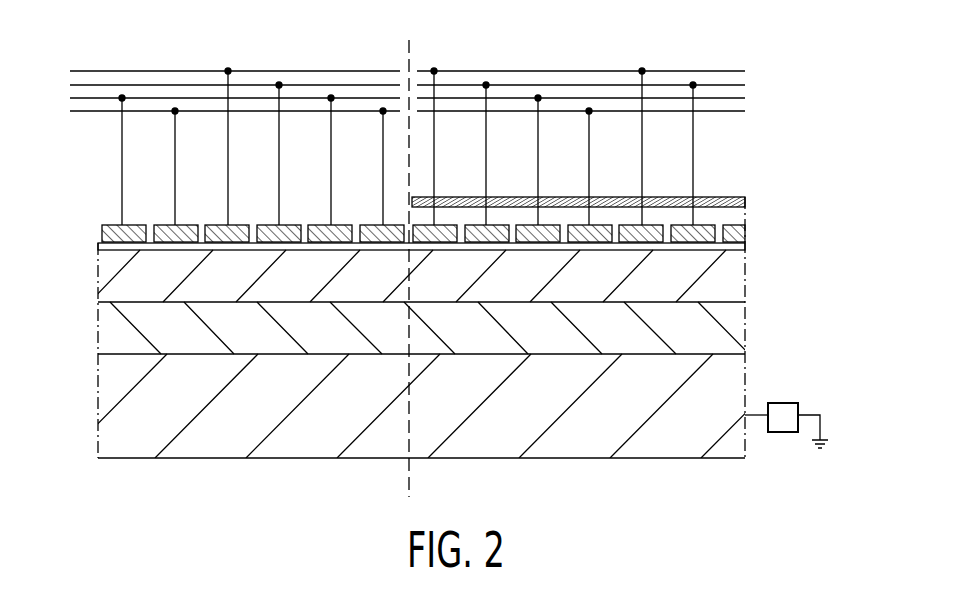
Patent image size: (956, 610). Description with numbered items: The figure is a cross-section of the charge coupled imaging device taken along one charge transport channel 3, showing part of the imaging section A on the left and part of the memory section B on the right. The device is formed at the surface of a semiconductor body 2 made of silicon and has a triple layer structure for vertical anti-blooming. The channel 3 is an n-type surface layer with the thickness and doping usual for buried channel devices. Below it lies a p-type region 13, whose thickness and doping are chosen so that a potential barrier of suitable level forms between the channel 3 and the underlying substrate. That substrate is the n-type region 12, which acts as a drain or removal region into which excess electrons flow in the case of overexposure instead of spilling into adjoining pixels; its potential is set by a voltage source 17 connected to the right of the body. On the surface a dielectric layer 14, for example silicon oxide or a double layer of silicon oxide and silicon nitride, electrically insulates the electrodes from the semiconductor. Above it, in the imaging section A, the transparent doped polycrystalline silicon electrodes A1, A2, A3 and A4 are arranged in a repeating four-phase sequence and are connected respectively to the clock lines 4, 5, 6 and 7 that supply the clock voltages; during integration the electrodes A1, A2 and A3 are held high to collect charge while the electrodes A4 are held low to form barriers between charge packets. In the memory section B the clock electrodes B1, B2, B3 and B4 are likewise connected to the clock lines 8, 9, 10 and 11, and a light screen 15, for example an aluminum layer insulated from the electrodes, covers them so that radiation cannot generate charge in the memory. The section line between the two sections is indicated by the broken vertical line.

The semiconductor body 2 is at (775, 459).
The charge transport channel 3 is at (98, 277).
The clock line 4 is at (110, 71).
The clock line 5 is at (97, 85).
The clock line 6 is at (84, 98).
The clock line 7 is at (73, 111).
The clock line 8 is at (745, 70).
The clock line 9 is at (745, 84).
The clock line 10 is at (745, 97).
The clock line 11 is at (745, 110).
The removal region 12 is at (108, 430).
The p-type region 13 is at (108, 334).
The dielectric layer 14 is at (738, 247).
The light screen 15 is at (745, 201).
The voltage source 17 is at (783, 403).
The imaging section electrode A1 is at (214, 223).
The imaging section electrode A2 is at (262, 223).
The imaging section electrode A3 is at (107, 223).
The imaging section electrode A4 is at (158, 223).
The memory section clock electrode B1 is at (442, 223).
The memory section clock electrode B2 is at (495, 223).
The memory section clock electrode B3 is at (547, 223).
The memory section clock electrode B4 is at (600, 223).
The imaging section A is at (251, 475).
The memory section B is at (573, 475).